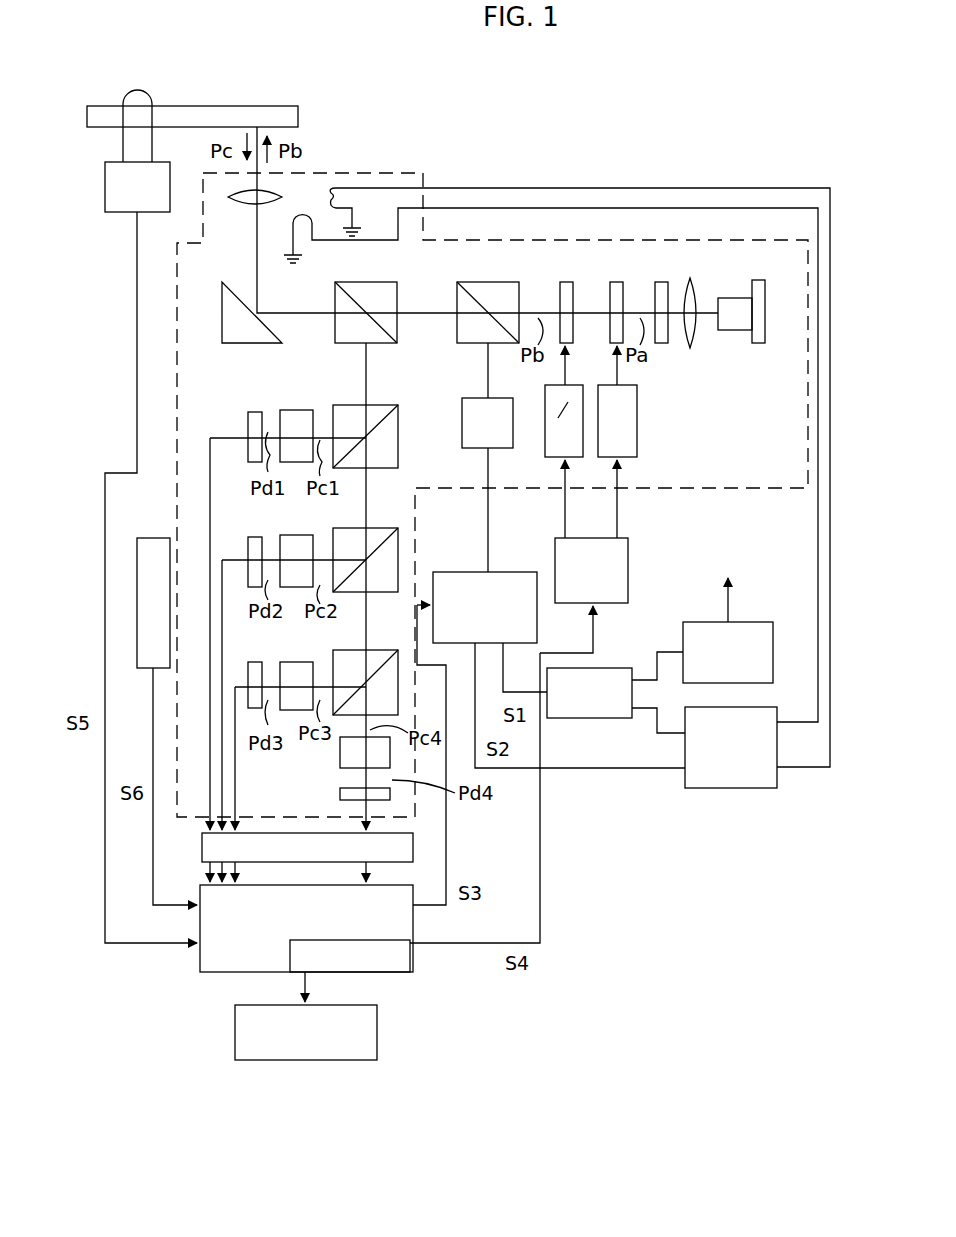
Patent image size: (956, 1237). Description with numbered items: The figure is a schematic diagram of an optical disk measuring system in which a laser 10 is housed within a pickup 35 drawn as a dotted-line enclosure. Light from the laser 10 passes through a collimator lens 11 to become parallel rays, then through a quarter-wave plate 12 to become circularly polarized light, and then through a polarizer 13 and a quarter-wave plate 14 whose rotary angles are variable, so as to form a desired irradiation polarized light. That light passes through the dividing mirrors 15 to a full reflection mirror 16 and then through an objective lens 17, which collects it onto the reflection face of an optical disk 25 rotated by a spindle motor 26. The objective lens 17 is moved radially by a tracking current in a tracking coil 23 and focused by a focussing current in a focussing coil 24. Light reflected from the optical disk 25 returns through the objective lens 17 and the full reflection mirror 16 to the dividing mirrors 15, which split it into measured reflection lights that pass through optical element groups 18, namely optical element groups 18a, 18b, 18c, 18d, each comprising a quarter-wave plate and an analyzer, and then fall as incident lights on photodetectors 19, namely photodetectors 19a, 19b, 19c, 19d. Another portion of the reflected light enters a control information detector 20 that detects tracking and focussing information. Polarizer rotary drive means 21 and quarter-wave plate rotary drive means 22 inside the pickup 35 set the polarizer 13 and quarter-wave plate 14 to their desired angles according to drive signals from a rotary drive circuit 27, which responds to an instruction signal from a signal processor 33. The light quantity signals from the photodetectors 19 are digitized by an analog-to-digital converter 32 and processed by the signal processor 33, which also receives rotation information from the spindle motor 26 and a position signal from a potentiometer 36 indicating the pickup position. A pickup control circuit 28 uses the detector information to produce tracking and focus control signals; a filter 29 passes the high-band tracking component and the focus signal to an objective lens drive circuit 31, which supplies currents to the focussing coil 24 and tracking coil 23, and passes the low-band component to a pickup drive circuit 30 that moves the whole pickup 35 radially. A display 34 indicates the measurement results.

The laser 10 is at (737, 323).
The collimator lens 11 is at (691, 292).
The λ/4 plate 12 is at (661, 286).
The polarizer 13 is at (616, 286).
The λ/4 plate 14 is at (566, 286).
The dividing mirrors 15 is at (369, 292).
The full reflection mirror 16 is at (246, 330).
The objective lens 17 is at (248, 203).
The optical element groups 18 is at (335, 579).
The optical element group 18a is at (296, 420).
The optical element group 18b is at (296, 545).
The optical element group 18c is at (296, 672).
The optical element group 18d is at (340, 757).
The photodetectors 19 is at (290, 607).
The photodetector 19a is at (248, 420).
The photodetector 19b is at (250, 550).
The photodetector 19c is at (250, 672).
The photodetector 19d is at (340, 794).
The control information detector 20 is at (462, 406).
The polarizer rotary drive means 21 is at (634, 452).
The λ/4 plate rotary drive means 22 is at (548, 438).
The tracking coil 23 is at (300, 222).
The focussing coil 24 is at (332, 200).
The optical disk 25 is at (186, 112).
The spindle motor 26 is at (122, 216).
The rotary drive circuit 27 is at (616, 574).
The pickup control circuit 28 is at (456, 580).
The filter 29 is at (579, 713).
The pickup drive circuit 30 is at (742, 632).
The objective lens drive circuit 31 is at (726, 790).
The analog-to-digital converter 32 is at (400, 848).
The signal processor 33 is at (405, 925).
The display 34 is at (365, 1038).
The pickup 35 is at (546, 240).
The potentiometer 36 is at (152, 552).